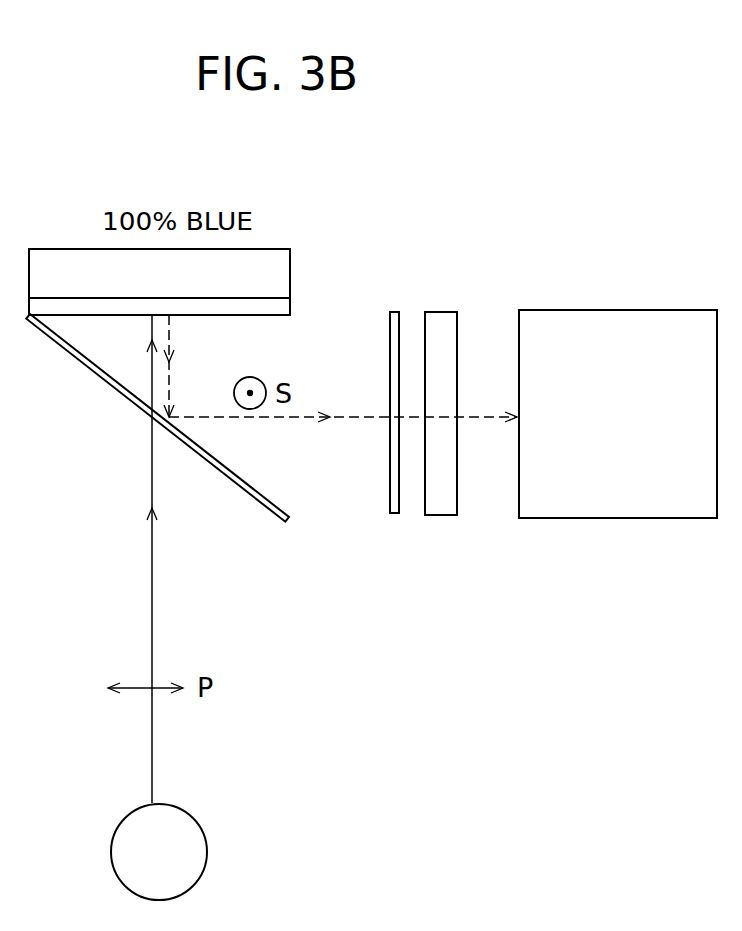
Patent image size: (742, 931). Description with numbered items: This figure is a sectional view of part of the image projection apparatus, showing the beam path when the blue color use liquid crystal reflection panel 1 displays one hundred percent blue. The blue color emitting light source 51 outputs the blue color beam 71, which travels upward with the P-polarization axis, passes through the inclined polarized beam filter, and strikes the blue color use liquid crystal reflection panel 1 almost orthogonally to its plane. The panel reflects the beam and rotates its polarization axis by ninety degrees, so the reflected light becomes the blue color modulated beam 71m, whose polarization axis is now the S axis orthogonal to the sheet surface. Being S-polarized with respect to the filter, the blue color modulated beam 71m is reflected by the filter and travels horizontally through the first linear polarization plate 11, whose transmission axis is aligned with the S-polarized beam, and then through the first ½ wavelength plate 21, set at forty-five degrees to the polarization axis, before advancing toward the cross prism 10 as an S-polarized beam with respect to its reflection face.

The first liquid crystal reflection panel 1 is at (290, 272).
The cross prism 10 is at (617, 310).
The first linear polarization plate 11 is at (395, 312).
The first ½ wavelength plate 21 is at (438, 312).
The blue color emitting light source 51 is at (112, 855).
The blue color beam 71 is at (153, 597).
The blue color modulated beam 71m is at (170, 343).